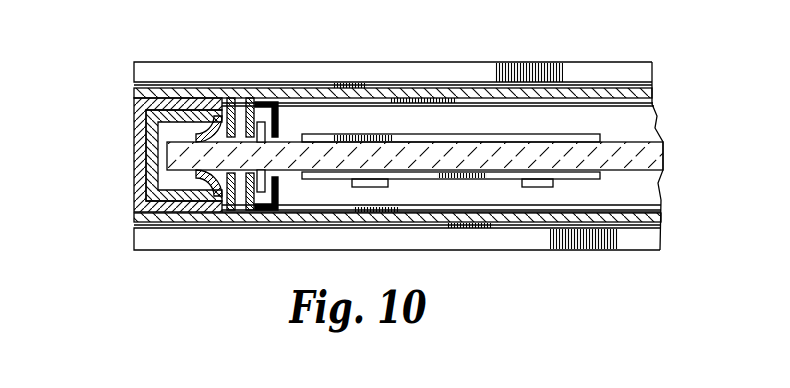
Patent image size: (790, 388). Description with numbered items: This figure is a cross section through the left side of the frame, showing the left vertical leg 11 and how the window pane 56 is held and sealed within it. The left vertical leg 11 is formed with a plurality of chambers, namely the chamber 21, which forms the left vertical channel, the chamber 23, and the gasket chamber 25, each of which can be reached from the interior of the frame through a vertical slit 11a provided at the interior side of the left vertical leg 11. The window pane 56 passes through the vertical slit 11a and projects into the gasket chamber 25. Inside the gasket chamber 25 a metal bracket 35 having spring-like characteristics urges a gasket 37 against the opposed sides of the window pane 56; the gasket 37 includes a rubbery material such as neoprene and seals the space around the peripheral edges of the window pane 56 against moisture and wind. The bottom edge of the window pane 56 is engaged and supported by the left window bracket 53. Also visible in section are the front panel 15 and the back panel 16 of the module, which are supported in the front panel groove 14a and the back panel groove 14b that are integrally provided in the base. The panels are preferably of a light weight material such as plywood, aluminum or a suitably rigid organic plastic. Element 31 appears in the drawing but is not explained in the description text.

The left vertical leg 11 is at (127, 122).
The vertical slit 11a is at (279, 138).
The front panel groove 14a is at (637, 226).
The back panel groove 14b is at (627, 83).
The front panel 15 is at (571, 220).
The back panel 16 is at (566, 92).
The chamber 21 is at (263, 104).
The chamber 23 is at (248, 108).
The gasket chamber 25 is at (222, 105).
The lower connector bracket 31 is at (282, 213).
The metal bracket 35 is at (183, 208).
The gasket 37 is at (136, 195).
The left window bracket 53 is at (447, 137).
The window pane 56 is at (623, 153).